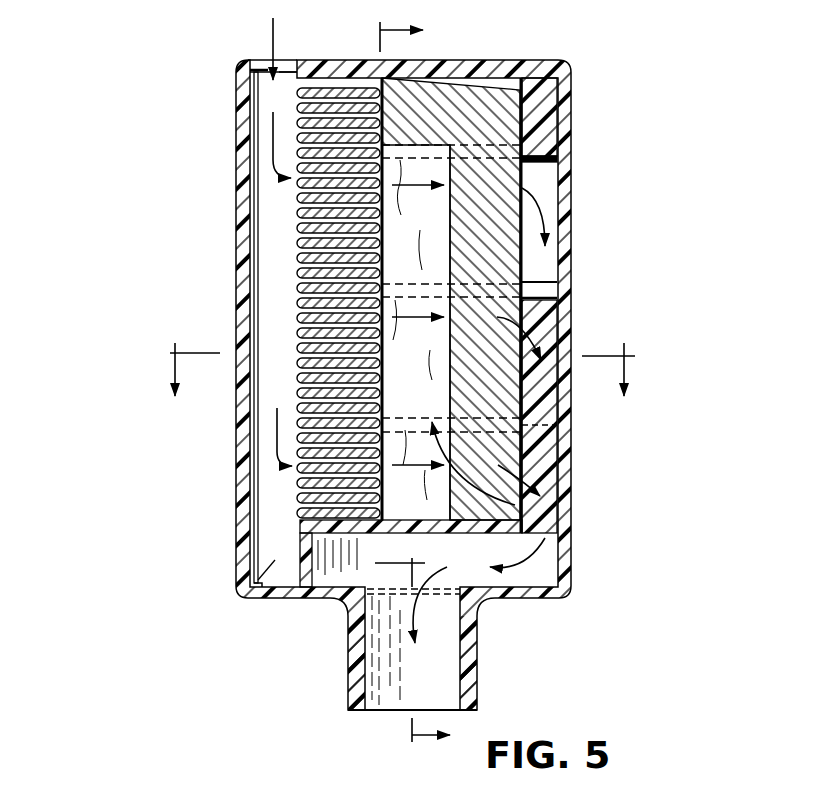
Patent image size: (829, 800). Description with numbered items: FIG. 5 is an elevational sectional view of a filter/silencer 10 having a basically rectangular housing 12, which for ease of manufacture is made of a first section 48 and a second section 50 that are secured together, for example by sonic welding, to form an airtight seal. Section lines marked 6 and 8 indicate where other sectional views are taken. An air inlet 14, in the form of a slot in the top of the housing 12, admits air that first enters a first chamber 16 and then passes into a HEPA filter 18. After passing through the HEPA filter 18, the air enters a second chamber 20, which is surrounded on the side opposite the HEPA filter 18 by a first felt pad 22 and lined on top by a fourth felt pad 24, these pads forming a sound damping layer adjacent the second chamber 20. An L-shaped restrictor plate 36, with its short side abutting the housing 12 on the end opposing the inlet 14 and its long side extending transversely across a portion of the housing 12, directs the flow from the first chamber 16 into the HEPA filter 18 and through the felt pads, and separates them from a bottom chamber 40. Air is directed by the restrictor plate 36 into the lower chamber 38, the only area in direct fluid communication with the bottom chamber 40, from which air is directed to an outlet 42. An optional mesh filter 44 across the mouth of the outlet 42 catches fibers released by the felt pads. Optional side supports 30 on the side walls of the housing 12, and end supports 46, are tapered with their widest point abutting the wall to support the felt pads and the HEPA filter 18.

The filter/silencer 10 is at (143, 148).
The housing 12 is at (240, 215).
The air inlet 14 is at (268, 66).
The first chamber 16 is at (257, 597).
The HEPA filter 18 is at (297, 100).
The second chamber 20 is at (523, 517).
The first felt pad 22 is at (570, 97).
The fourth felt pad 24 is at (430, 90).
The side supports 30 is at (573, 135).
The restrictor plate 36 is at (315, 588).
The lower chamber 38 is at (550, 480).
The bottom chamber 40 is at (542, 575).
The outlet 42 is at (467, 688).
The mesh filter 44 is at (443, 597).
The end supports 46 is at (545, 62).
The first section 48 is at (240, 438).
The second section 50 is at (290, 598).
The section line 6- 6 is at (402, 360).
The section line 8- 8 is at (396, 385).